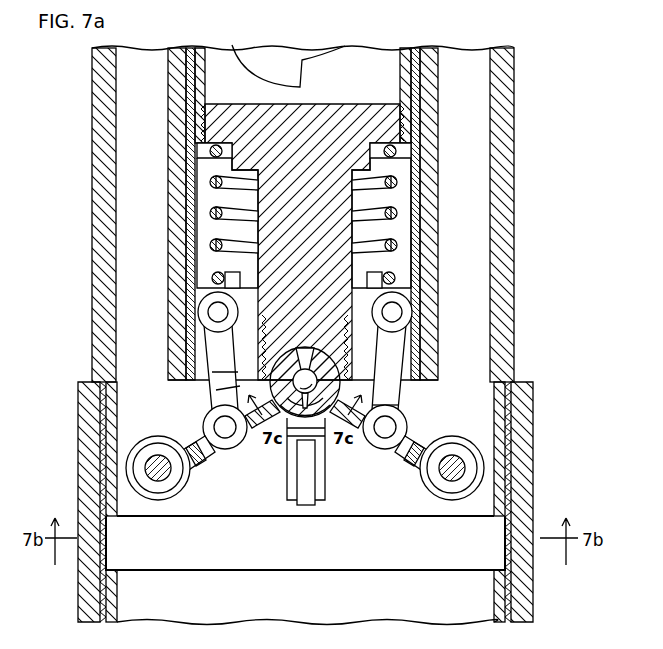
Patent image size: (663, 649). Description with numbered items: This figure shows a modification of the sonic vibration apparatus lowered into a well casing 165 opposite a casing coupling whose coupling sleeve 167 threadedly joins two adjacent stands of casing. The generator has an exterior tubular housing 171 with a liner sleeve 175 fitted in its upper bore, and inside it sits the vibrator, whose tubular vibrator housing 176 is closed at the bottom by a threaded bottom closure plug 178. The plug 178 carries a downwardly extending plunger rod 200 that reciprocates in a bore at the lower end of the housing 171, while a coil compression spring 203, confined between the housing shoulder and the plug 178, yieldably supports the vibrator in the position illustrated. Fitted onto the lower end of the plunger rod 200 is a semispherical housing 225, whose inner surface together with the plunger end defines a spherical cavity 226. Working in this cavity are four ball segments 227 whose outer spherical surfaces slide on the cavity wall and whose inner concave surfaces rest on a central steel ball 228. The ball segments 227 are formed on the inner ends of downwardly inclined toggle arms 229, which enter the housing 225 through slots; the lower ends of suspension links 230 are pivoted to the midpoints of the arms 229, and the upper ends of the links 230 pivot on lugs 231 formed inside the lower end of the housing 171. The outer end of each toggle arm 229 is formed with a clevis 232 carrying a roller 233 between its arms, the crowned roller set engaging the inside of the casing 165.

The well casing 165 is at (97, 300).
The coupling sleeve 167 is at (522, 426).
The tubular housing 171 is at (432, 268).
The liner sleeve 175 is at (416, 50).
The vibrator housing 176 is at (401, 52).
The bottom closure plug 178 is at (362, 110).
The plunger rod 200 is at (350, 224).
The coil compression spring 203 is at (395, 205).
The semispherical housing 225 is at (320, 412).
The spherical cavity 226 is at (295, 430).
The ball segments 227 is at (380, 378).
The central steel ball 228 is at (240, 379).
The toggle arms 229 is at (200, 424).
The suspension links 230 is at (396, 362).
The lugs 231 is at (199, 327).
The clevis 232 is at (172, 483).
The roller 233 is at (190, 479).